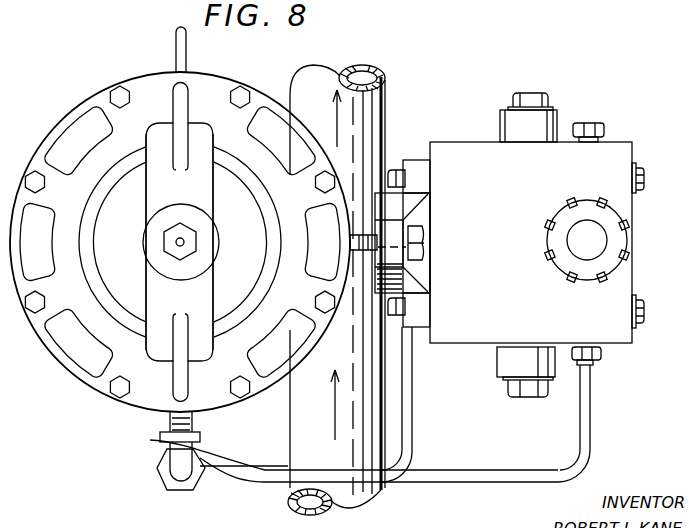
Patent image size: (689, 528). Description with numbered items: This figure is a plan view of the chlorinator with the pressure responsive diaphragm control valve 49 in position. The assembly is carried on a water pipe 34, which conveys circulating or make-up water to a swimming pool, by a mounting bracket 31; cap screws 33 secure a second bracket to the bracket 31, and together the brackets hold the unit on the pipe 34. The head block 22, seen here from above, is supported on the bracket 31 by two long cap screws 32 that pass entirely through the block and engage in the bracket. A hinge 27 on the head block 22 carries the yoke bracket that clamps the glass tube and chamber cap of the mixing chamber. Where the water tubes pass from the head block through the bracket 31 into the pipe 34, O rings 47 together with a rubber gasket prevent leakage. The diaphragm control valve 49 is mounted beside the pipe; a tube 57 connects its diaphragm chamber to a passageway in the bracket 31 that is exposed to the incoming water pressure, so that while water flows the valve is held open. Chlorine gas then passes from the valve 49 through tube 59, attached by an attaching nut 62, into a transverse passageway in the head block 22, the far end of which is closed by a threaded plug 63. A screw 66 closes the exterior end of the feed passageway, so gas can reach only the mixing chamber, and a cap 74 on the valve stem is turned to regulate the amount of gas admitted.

The head block 22 is at (622, 142).
The hinge 27 is at (547, 98).
The bracket 31 is at (430, 196).
The long cap screws 32 is at (643, 180).
The cap screws 33 is at (430, 238).
The water pipe 34 is at (322, 72).
The O rings 47 is at (432, 212).
The diaphragm control valve 49 is at (96, 91).
The tube 57 is at (213, 468).
The tube 59 is at (592, 385).
The attaching nut 62 is at (600, 355).
The threaded plug 63 is at (592, 128).
The screw 66 is at (624, 244).
The cap 74 is at (627, 237).